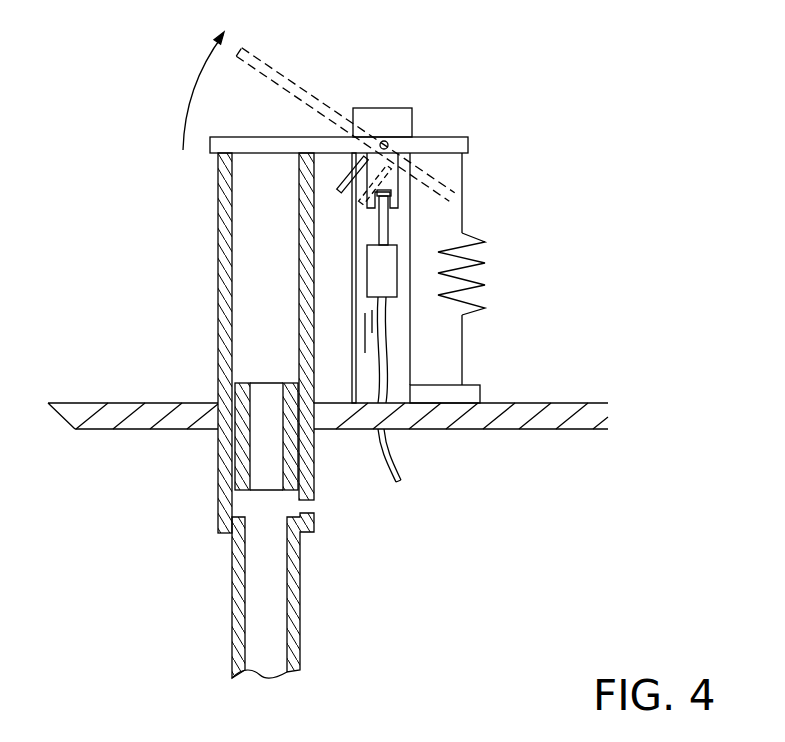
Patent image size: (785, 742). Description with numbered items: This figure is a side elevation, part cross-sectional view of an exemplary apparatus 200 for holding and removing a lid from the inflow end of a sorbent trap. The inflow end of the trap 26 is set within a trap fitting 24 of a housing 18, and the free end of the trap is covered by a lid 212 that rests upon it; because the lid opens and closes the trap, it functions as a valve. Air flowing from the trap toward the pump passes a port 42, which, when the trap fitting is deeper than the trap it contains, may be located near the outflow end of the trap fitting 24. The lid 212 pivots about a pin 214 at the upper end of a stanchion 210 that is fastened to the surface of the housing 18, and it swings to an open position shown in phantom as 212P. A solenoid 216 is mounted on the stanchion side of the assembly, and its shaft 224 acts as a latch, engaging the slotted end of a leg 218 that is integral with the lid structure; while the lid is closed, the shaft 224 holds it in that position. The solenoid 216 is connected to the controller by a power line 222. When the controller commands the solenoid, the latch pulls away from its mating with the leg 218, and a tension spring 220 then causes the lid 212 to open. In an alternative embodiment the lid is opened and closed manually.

The housing 18 is at (570, 403).
The trap fitting 24 is at (218, 500).
The trap 26 is at (218, 268).
The port 42 is at (312, 504).
The apparatus 200 is at (418, 97).
The stanchion 210 is at (388, 362).
The lid 212 is at (250, 137).
The phantom open position of lid 212P is at (262, 58).
The pin 214 is at (385, 137).
The solenoid 216 is at (397, 270).
The leg 218 is at (390, 188).
The tension spring 220 is at (487, 290).
The power line 222 is at (385, 472).
The shaft 224 is at (389, 224).